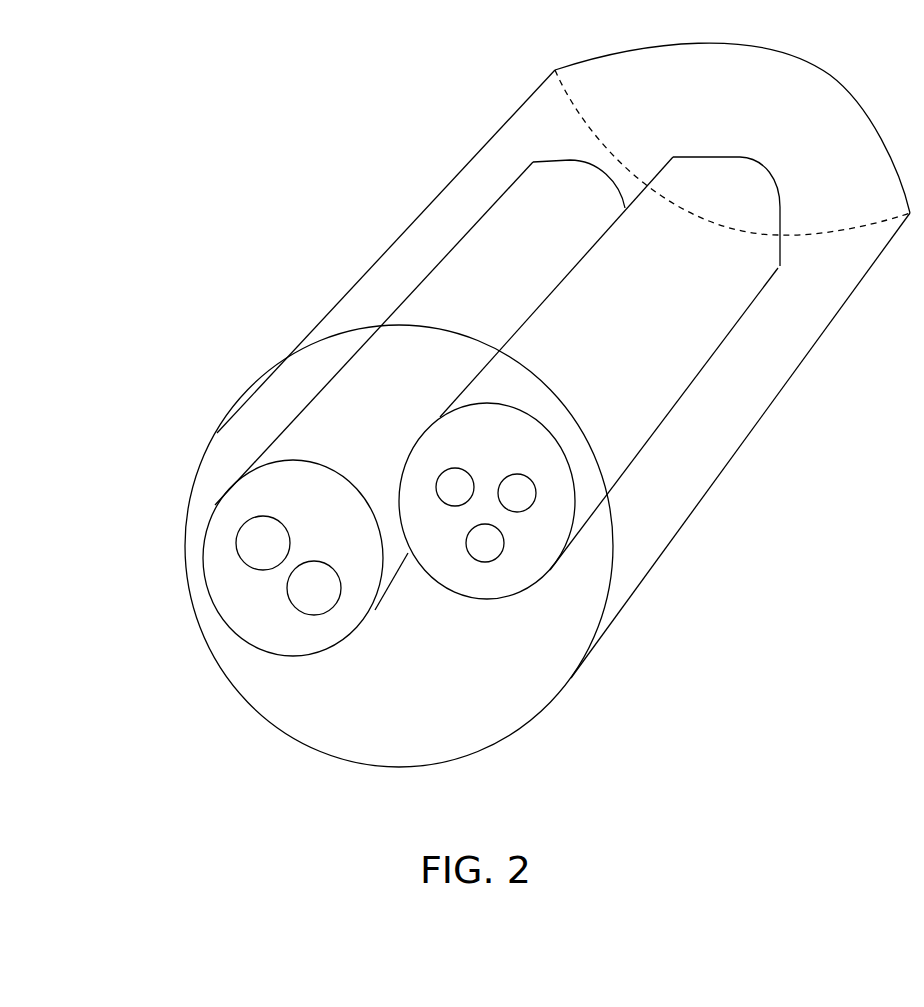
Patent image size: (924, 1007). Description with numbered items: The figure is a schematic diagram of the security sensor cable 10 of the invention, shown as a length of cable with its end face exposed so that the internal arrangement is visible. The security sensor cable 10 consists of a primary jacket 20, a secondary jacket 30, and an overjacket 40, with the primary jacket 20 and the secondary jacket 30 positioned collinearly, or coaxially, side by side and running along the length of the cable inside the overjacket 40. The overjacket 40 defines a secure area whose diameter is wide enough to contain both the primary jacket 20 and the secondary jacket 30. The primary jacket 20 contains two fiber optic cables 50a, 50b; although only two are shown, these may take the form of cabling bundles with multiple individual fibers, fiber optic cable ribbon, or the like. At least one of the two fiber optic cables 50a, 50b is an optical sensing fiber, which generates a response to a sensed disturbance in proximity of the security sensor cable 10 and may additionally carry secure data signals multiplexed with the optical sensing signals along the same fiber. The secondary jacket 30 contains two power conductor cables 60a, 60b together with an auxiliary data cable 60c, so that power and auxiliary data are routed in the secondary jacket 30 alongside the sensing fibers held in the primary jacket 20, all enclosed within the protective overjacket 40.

The security sensor cable 10 is at (270, 251).
The primary jacket 20 is at (207, 585).
The secondary jacket 30 is at (480, 600).
The overjacket 40 is at (247, 701).
The fiber optic cable 50a is at (258, 528).
The fiber optic cable 50b is at (302, 595).
The power conductor cable 60a is at (447, 487).
The power conductor cable 60b is at (468, 543).
The auxiliary data cable 60c is at (527, 497).